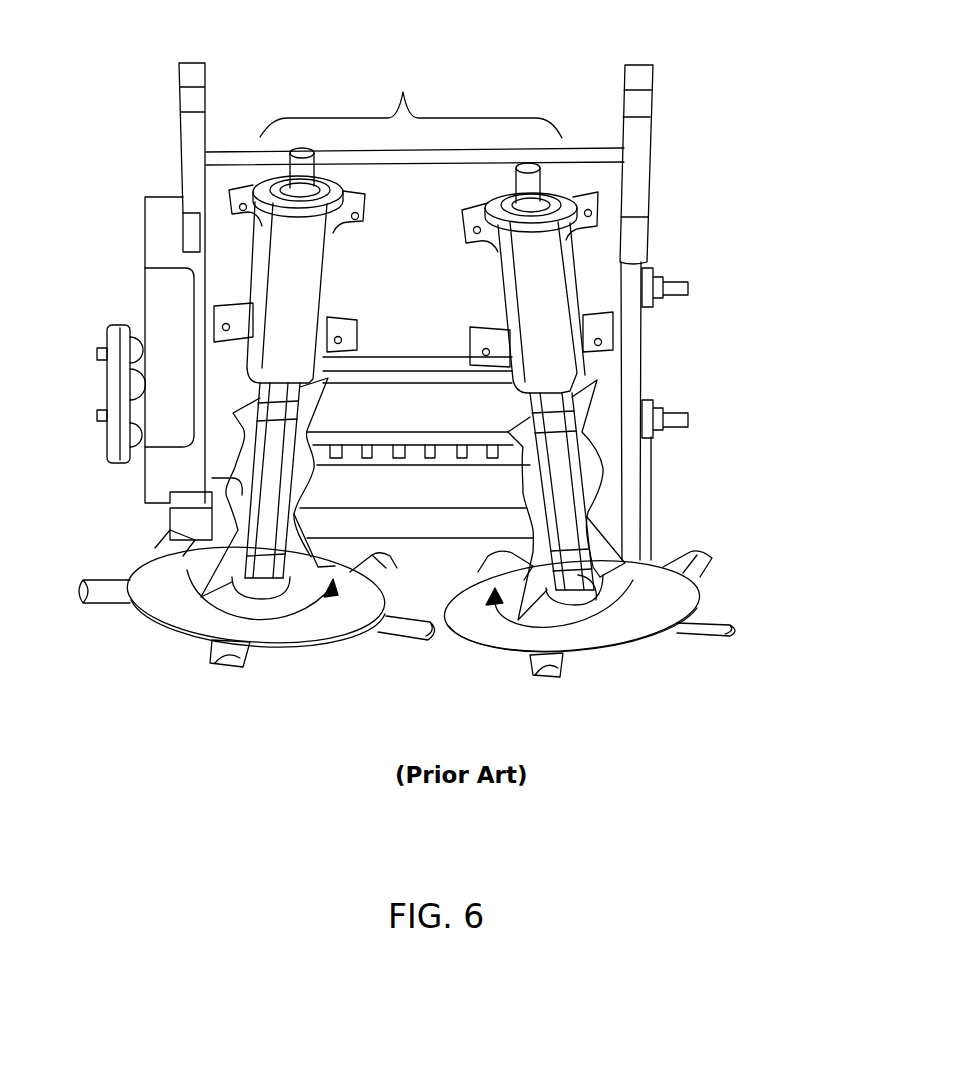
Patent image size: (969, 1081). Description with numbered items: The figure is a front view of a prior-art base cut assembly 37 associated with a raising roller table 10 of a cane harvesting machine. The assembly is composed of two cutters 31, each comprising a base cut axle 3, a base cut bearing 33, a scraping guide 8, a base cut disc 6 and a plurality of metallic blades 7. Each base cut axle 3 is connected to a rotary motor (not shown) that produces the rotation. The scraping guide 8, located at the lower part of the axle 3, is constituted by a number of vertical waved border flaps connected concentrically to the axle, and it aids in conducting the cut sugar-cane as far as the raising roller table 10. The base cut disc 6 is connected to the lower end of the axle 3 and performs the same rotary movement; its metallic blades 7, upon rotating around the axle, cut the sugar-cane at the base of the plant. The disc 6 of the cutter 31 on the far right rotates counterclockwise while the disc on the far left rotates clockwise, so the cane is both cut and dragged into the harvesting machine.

The raising roller table 10 is at (573, 172).
The base cut assembly 37 is at (411, 99).
The base cut bearing 33 is at (292, 262).
The base cut axle 3 is at (268, 427).
The scraping guide 8 is at (303, 456).
The base cut disc 6 is at (160, 558).
The metallic blades 7 is at (92, 588).
The cutter 31 is at (213, 704).